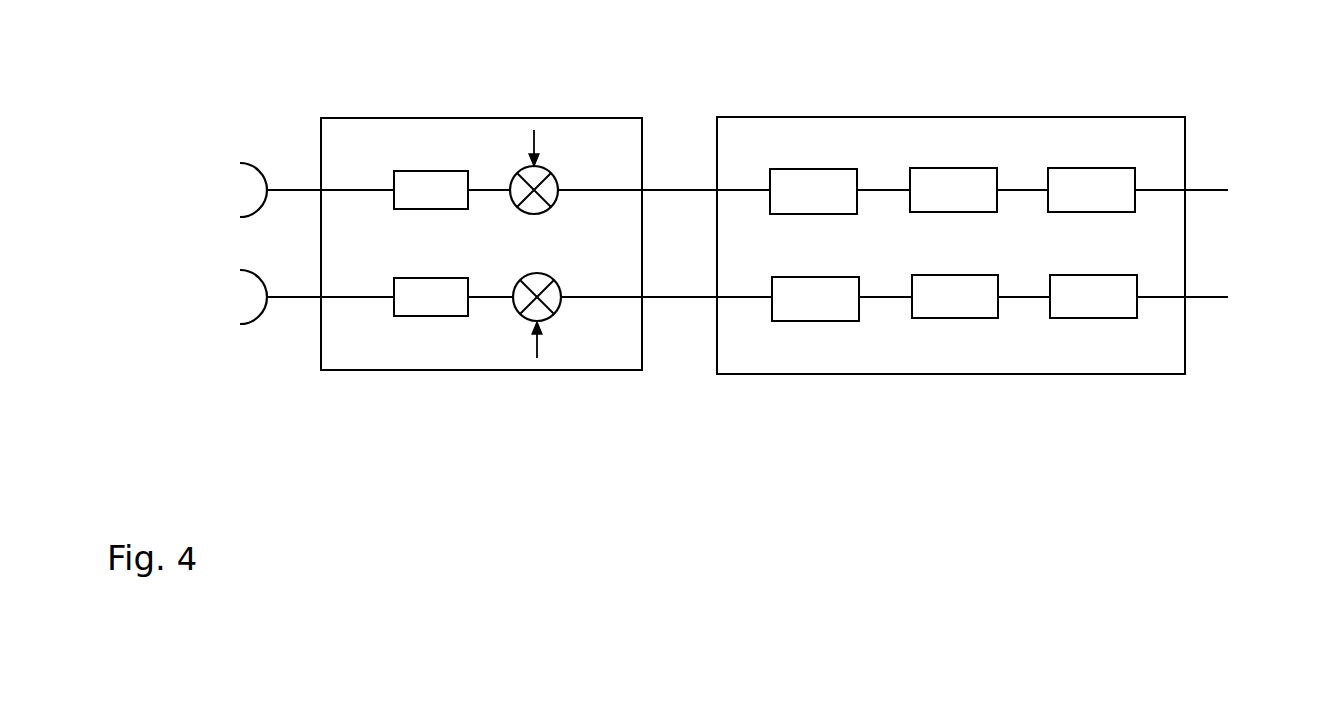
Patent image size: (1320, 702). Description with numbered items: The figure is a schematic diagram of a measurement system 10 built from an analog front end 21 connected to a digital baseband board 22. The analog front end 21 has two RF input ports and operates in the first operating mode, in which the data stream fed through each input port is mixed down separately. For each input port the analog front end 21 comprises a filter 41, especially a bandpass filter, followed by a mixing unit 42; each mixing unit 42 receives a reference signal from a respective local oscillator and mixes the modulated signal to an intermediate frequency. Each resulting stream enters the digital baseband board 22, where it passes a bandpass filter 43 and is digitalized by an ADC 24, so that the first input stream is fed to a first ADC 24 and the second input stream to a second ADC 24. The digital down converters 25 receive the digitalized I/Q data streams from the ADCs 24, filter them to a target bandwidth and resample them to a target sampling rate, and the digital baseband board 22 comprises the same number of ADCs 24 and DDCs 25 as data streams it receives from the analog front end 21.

The measurement system 10 is at (1222, 78).
The analog front end 21 is at (481, 118).
The digital baseband board 22 is at (956, 117).
The filter 41 is at (439, 170).
The mixing unit 42 is at (557, 181).
The bandpass filter 43 is at (815, 169).
The ADC 24 is at (955, 168).
The digital down converter 25 is at (1091, 168).